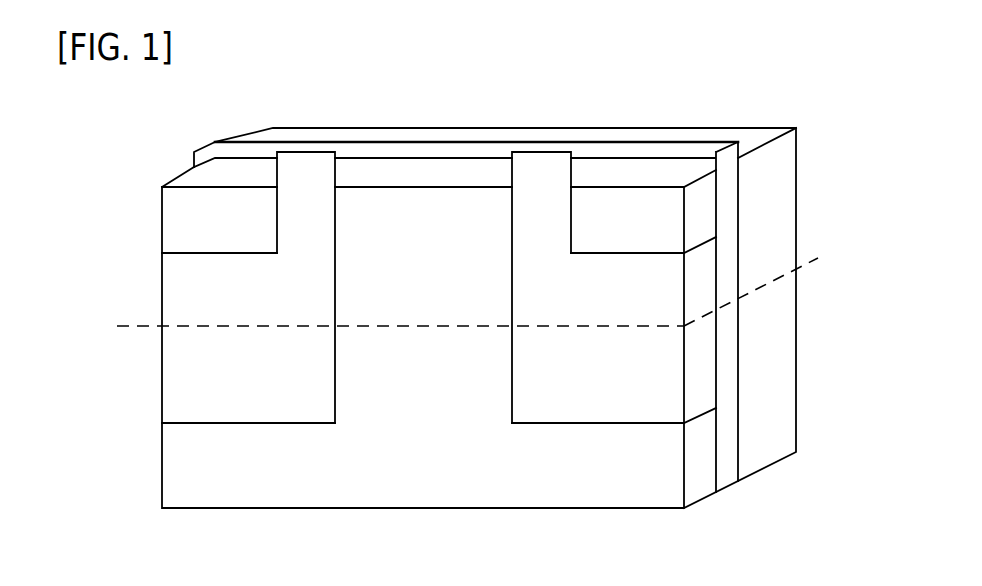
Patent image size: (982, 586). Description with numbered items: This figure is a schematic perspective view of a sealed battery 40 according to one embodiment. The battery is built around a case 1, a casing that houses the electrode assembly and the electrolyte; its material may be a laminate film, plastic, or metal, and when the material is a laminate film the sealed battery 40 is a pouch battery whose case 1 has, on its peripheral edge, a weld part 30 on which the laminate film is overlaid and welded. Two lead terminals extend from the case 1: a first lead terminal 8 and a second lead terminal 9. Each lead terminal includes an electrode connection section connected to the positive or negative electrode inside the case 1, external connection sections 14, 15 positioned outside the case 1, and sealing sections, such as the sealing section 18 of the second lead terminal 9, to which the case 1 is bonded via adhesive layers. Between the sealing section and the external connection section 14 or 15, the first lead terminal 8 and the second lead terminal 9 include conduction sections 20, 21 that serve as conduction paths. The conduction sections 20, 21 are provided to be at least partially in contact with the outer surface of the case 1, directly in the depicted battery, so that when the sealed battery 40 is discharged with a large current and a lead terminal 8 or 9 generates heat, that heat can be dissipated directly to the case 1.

The case 1 is at (413, 247).
The first lead terminal 8 is at (198, 390).
The second lead terminal 9 is at (640, 386).
The external connection section 14 is at (305, 170).
The external connection section 15 is at (537, 170).
The sealing section 18 is at (724, 381).
The conduction section 20 is at (182, 307).
The conduction section 21 is at (670, 351).
The weld part 30 is at (487, 150).
The sealed battery 40 is at (795, 86).